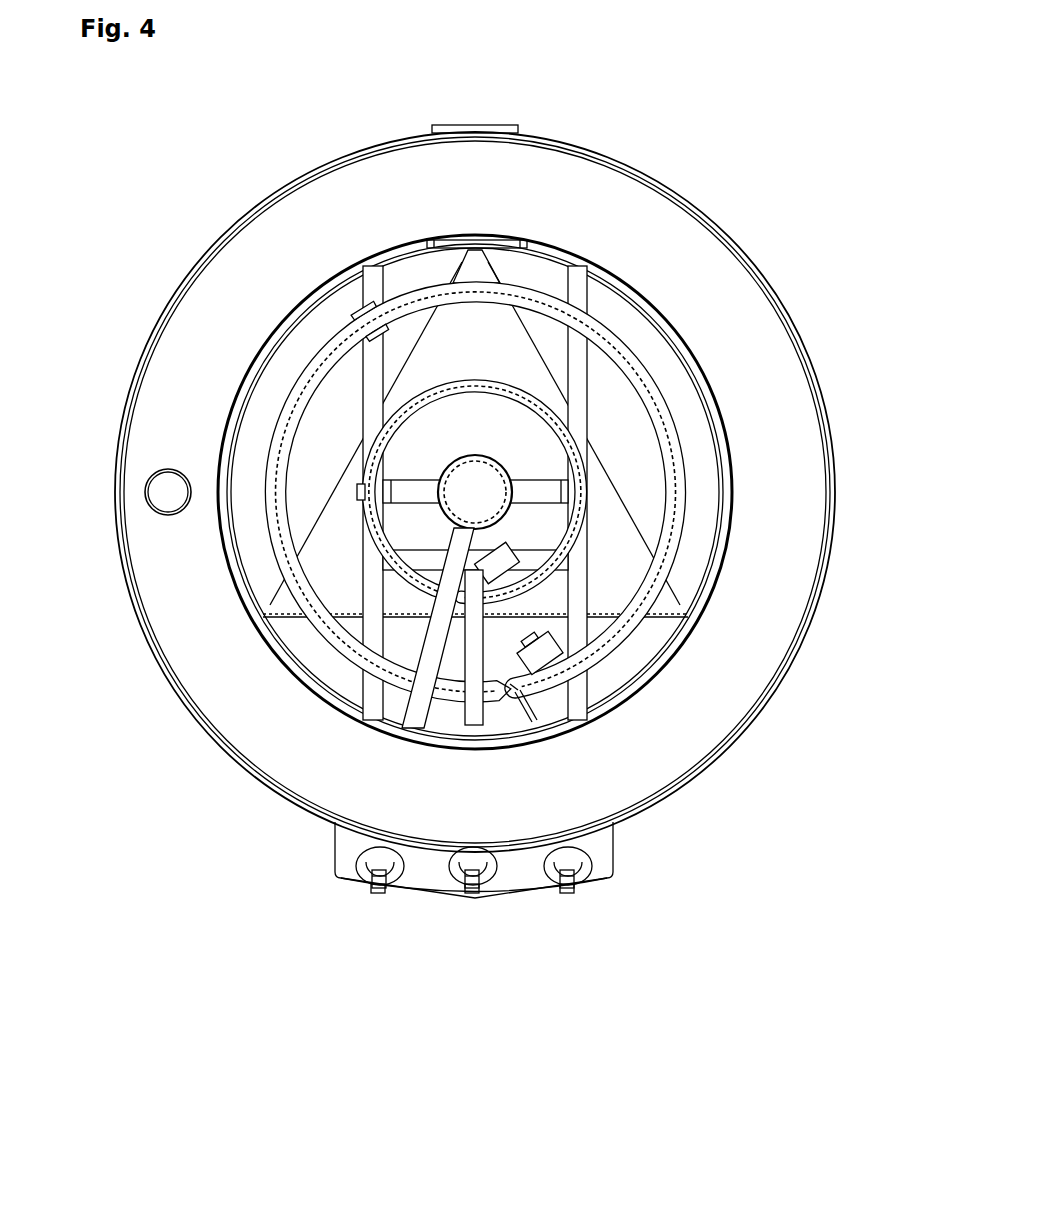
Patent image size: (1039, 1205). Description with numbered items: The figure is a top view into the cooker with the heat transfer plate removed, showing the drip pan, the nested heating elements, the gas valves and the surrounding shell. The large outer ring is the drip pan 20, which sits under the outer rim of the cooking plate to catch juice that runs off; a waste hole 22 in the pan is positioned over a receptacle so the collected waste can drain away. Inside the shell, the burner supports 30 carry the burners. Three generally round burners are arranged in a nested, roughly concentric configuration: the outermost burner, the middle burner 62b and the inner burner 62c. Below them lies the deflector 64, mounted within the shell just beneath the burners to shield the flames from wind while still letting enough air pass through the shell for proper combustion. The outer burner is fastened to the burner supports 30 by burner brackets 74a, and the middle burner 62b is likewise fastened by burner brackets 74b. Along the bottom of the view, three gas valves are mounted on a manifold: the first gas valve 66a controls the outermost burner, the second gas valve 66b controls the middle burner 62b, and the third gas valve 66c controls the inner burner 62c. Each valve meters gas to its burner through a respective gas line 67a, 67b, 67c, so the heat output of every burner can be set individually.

The drip pan 20 is at (278, 225).
The waste hole 22 is at (127, 492).
The burner supports 30 is at (596, 379).
The middle burner 62b is at (581, 430).
The inner burner 62c is at (503, 483).
The deflector 64 is at (475, 485).
The first gas valve 66a is at (592, 903).
The second gas valve 66b is at (475, 929).
The third gas valve 66c is at (362, 902).
The gas line 67a is at (544, 721).
The gas line 67b is at (492, 736).
The gas line 67c is at (387, 722).
The burner brackets 74a is at (365, 289).
The burner brackets 74b is at (359, 477).